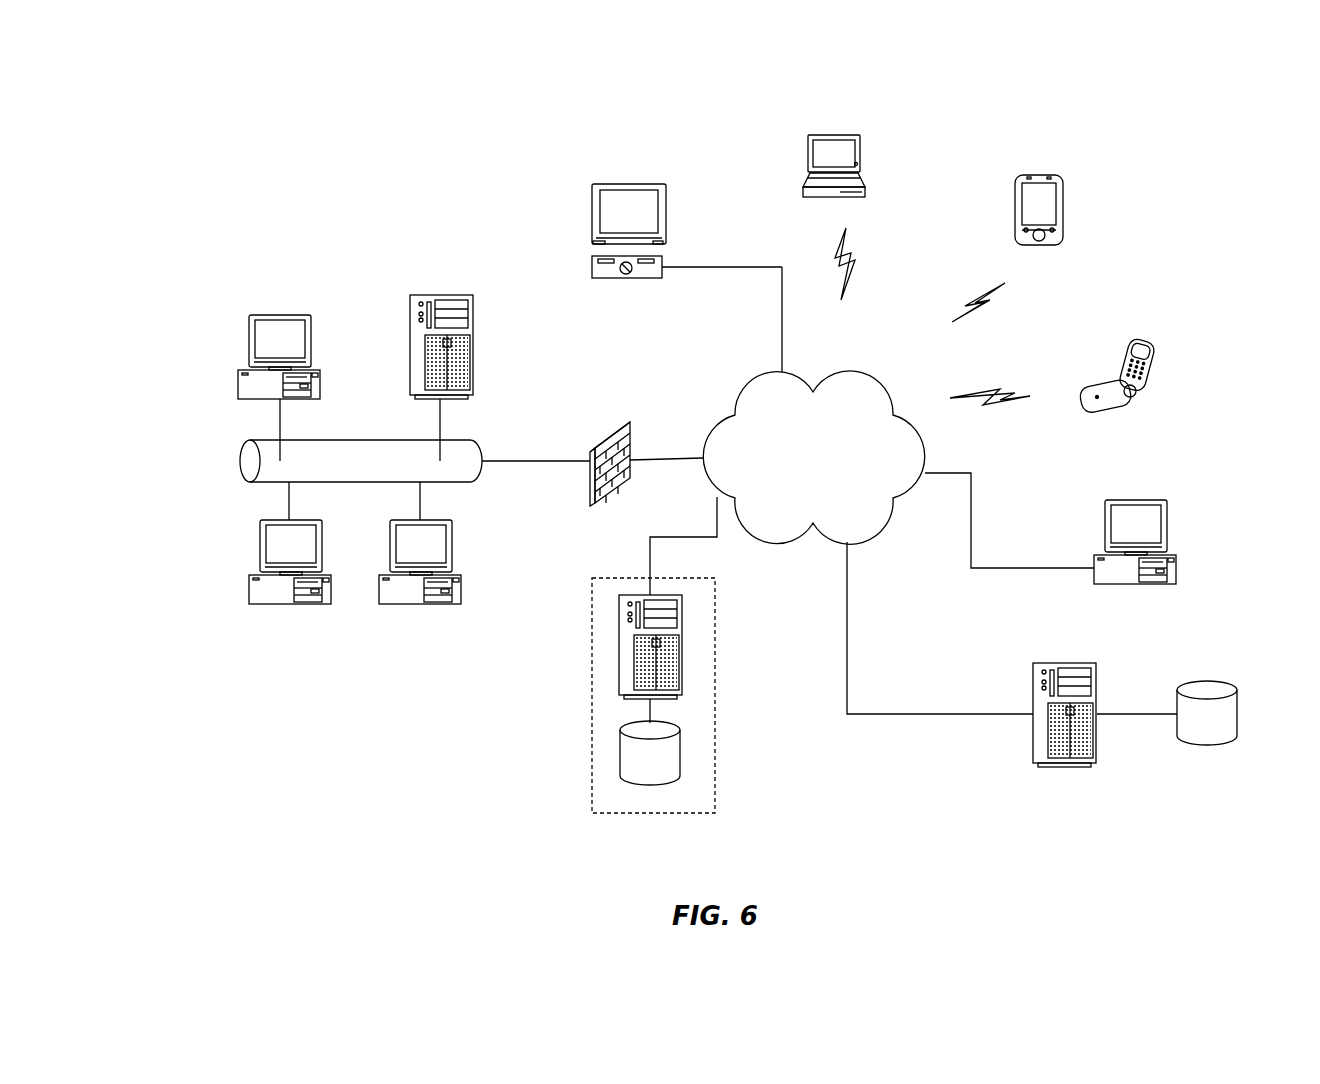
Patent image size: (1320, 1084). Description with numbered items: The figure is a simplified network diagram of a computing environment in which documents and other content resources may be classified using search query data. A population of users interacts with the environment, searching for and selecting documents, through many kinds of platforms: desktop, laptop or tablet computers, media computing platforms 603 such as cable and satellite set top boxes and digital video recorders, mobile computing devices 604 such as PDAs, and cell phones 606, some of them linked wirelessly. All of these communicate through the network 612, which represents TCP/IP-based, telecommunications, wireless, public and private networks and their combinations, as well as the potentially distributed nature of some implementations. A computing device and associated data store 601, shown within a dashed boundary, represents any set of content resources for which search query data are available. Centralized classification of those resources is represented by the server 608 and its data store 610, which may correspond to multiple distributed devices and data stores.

The computing device and associated data store 601 is at (702, 695).
The media computing platform 603 is at (584, 231).
The mobile computing device 604 is at (993, 193).
The cell phone 606 is at (1095, 361).
The server 608 is at (1026, 694).
The data store 610 is at (1177, 693).
The network 612 is at (792, 446).